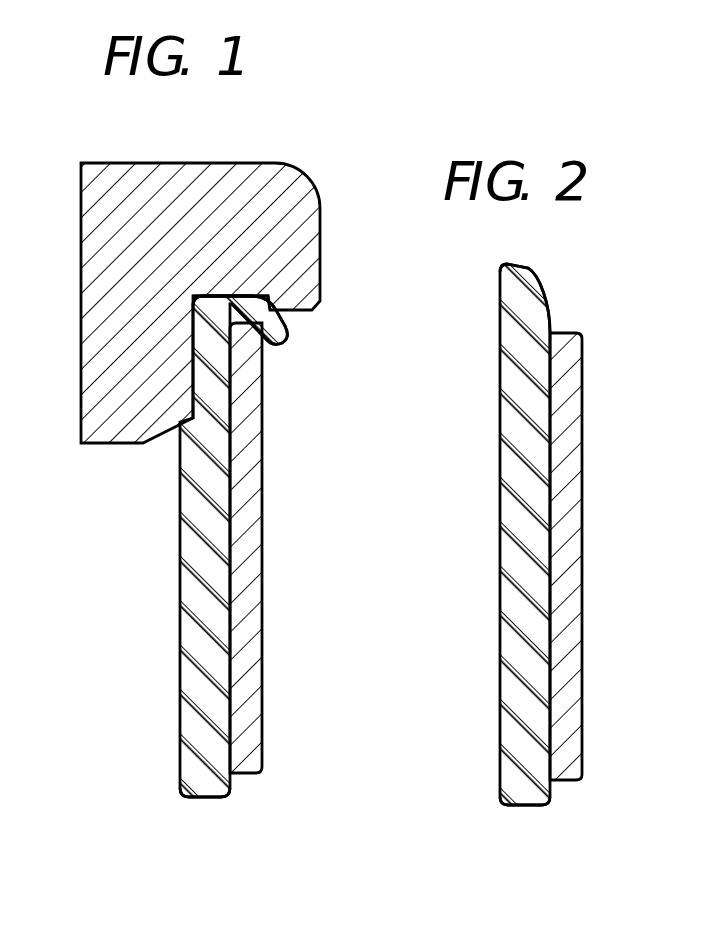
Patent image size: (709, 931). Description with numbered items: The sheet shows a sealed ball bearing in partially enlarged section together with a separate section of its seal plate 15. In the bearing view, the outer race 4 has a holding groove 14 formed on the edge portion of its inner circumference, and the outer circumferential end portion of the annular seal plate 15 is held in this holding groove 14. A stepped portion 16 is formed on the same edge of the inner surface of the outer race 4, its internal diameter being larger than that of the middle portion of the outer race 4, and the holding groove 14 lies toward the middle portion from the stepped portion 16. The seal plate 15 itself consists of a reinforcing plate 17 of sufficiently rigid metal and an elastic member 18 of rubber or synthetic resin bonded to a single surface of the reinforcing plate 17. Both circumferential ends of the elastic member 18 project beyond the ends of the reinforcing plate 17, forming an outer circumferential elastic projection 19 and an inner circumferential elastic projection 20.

In FIG. 1, the outer race 4 is at (113, 190).
In FIG. 1, the holding groove 14 is at (225, 295).
In FIG. 1, the seal plate 15 is at (226, 489).
In FIG. 2, the seal plate 15 is at (580, 555).
In FIG. 1, the stepped portion 16 is at (291, 337).
In FIG. 1, the reinforcing plate 17 is at (262, 484).
In FIG. 2, the reinforcing plate 17 is at (572, 492).
In FIG. 1, the elastic member 18 is at (188, 628).
In FIG. 2, the elastic member 18 is at (537, 585).
In FIG. 1, the outer circumferential elastic projection 19 is at (262, 296).
In FIG. 2, the outer circumferential elastic projection 19 is at (526, 297).
In FIG. 1, the inner circumferential elastic projection 20 is at (192, 790).
In FIG. 2, the inner circumferential elastic projection 20 is at (529, 795).